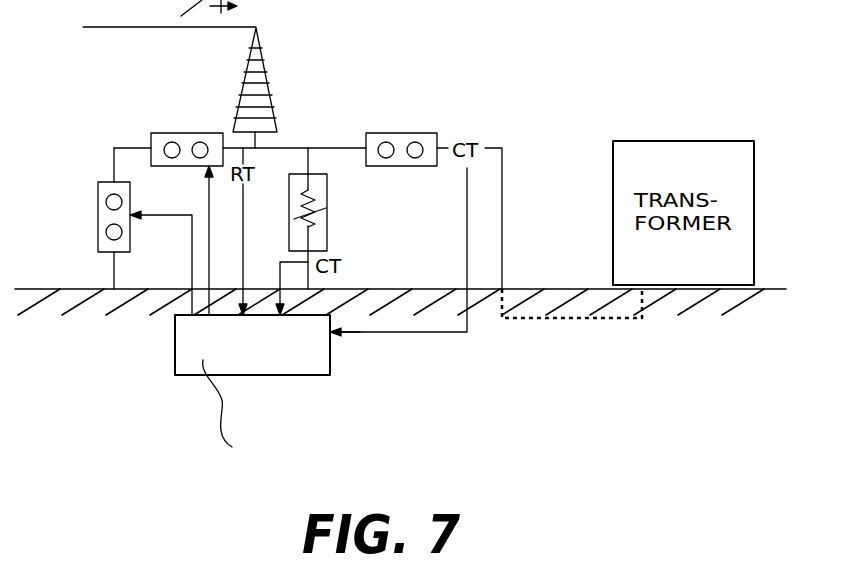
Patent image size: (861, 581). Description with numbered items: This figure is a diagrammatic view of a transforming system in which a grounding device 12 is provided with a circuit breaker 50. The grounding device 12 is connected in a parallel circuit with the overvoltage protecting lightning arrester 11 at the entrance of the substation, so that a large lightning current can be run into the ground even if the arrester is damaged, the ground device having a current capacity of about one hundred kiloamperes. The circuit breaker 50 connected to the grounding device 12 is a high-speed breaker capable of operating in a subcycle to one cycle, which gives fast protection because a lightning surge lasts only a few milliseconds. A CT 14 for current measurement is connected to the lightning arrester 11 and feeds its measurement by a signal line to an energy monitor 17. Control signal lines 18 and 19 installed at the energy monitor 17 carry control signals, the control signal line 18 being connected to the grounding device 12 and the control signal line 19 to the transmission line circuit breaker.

The circuit breaker 50 is at (173, 132).
The grounding device 12 is at (97, 232).
The lightning arrester 11 is at (327, 227).
The control signal line 18 is at (192, 260).
The energy monitor 17 is at (270, 376).
The CT for current measurement 14 is at (342, 335).
The control signal line 19 is at (403, 338).